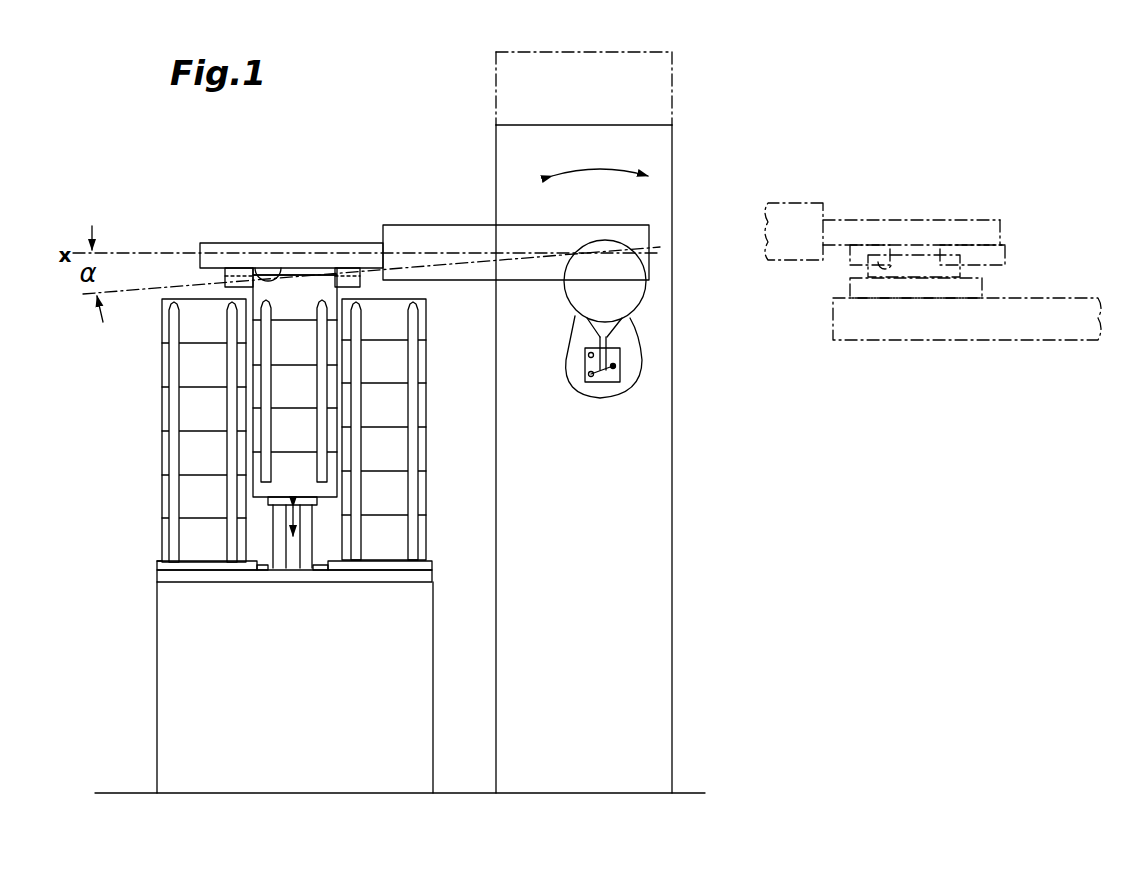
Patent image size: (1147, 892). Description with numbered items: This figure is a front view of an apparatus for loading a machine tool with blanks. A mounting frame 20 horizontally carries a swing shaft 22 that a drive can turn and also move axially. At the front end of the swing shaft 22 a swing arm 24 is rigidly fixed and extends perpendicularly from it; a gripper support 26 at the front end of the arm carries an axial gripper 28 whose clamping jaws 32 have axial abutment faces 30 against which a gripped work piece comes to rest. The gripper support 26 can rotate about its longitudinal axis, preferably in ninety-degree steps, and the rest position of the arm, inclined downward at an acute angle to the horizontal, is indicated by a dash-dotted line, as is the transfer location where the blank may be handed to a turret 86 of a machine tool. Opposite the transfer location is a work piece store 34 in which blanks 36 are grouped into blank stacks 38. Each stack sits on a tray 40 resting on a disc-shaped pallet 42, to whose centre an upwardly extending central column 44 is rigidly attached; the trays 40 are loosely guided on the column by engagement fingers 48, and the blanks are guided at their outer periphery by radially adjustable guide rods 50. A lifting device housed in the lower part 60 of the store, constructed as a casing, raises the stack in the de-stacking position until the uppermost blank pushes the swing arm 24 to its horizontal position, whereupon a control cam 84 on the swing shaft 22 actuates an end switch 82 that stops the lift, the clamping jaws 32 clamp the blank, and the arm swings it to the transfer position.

The mounting frame 20 is at (665, 417).
The swing shaft 22 is at (630, 288).
The swing arm 24 is at (427, 233).
The gripper support 26 is at (310, 244).
The axial gripper 28 is at (222, 274).
The axial abutment faces 30 is at (270, 282).
The clamping jaws 32 is at (240, 267).
The work piece store 34 is at (157, 562).
The blanks 36 is at (165, 488).
The blank stacks 38 is at (533, 418).
The tray 40 is at (190, 561).
The disc-shaped pallet 42 is at (432, 578).
The central column 44 is at (283, 568).
The engagement fingers 48 is at (263, 571).
The guide rods 50 is at (228, 349).
The lower part 60 is at (175, 656).
The end switch 82 is at (603, 375).
The control cam 84 is at (607, 331).
The turret 86 is at (978, 325).